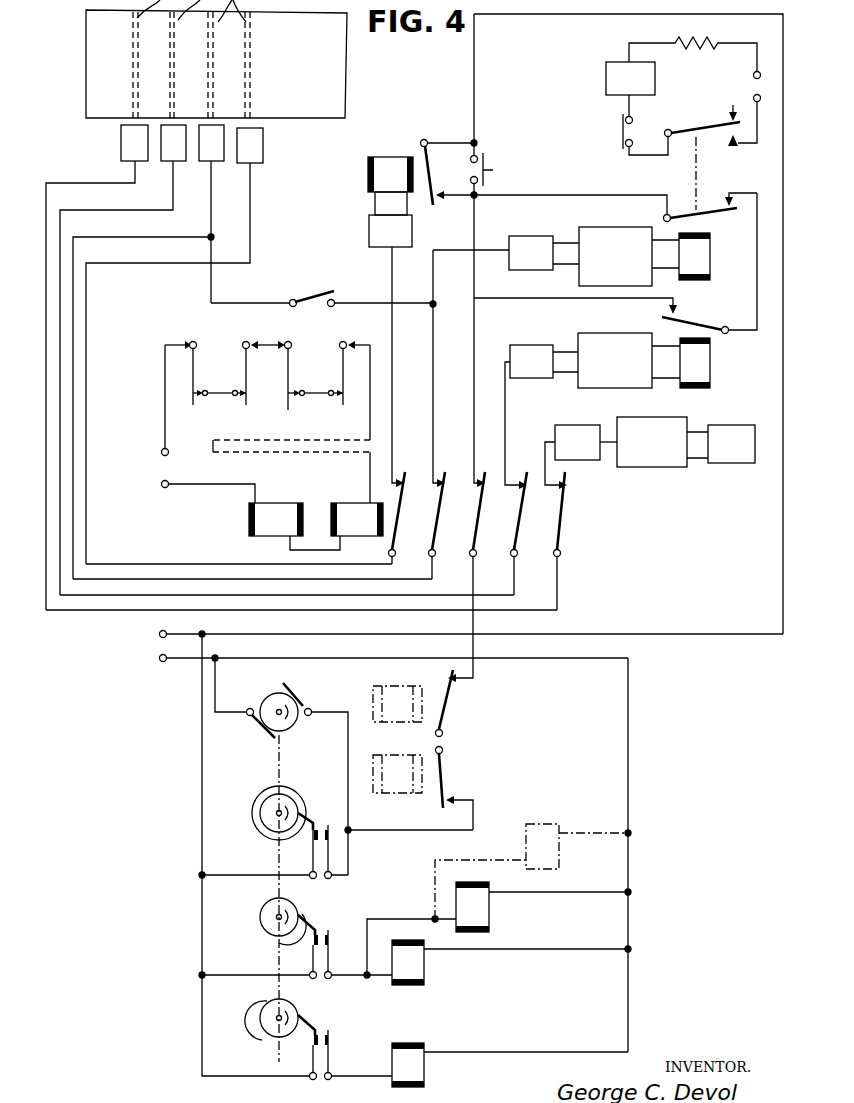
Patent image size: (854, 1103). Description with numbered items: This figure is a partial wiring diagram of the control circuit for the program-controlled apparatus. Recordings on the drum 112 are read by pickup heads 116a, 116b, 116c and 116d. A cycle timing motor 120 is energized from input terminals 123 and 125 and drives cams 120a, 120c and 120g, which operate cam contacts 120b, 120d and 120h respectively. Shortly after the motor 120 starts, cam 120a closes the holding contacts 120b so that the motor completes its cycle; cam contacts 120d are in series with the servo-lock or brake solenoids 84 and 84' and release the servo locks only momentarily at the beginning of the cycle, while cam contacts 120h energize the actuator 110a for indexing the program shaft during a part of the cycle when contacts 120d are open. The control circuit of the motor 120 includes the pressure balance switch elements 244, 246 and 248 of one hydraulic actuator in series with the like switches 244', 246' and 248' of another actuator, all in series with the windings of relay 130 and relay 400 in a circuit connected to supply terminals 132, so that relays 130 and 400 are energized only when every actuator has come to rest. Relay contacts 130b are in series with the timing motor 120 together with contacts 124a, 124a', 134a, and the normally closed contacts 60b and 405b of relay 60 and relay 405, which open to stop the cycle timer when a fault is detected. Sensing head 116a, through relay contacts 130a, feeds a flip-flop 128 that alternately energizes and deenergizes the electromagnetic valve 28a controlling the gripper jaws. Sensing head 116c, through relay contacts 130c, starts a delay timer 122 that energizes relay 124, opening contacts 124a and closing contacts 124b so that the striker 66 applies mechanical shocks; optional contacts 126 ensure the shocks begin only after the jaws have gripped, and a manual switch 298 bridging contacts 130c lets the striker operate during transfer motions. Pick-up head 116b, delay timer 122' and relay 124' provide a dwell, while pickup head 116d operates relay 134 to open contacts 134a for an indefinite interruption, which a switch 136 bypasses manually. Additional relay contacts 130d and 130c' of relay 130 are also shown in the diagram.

The drum 112 is at (88, 43).
The sensing head 116a is at (121, 145).
The pick-up head 116b is at (167, 160).
The sensing head 116c is at (202, 160).
The pickup head 116d is at (258, 148).
The relay 134 is at (368, 172).
The contacts 134a is at (420, 150).
The switch 136 is at (486, 170).
The striker 66 is at (606, 75).
The contacts 126 is at (618, 135).
The contacts 124b is at (695, 131).
The contacts 124a is at (615, 252).
The delay timer 122 is at (556, 339).
The relay 124 is at (711, 267).
The delay timer 122' is at (577, 393).
The relay contacts 124a' is at (708, 318).
The relay 124' is at (719, 363).
The flip-flop 128 is at (620, 466).
The electromagnetic valve 28a is at (726, 463).
The manual switch 298 is at (323, 298).
The pressure switch element 246 is at (190, 382).
The pressure switch element 248 is at (258, 360).
The pressure switch 246' is at (302, 363).
The pressure switch 248' is at (291, 409).
The pressure switch element 244 is at (219, 409).
The pressure switch 244' is at (315, 409).
The supply terminals 132 is at (163, 481).
The relay 400 is at (249, 520).
The relay 130 is at (357, 503).
The relay contacts 130d is at (374, 519).
The relay contacts 130c is at (419, 531).
The relay contacts 130b is at (472, 560).
The relay contacts 130c' is at (537, 533).
The relay contacts 130a is at (560, 553).
The input terminal 123 is at (160, 636).
The input terminal 125 is at (163, 662).
The cycle timing motor 120 is at (266, 700).
The relay 405 is at (373, 698).
The relay contacts 405b is at (455, 682).
The relay contacts 60b is at (455, 768).
The relay 60 is at (398, 792).
The cam 120a is at (260, 797).
The cam contacts 120b is at (318, 822).
The cam 120c is at (264, 906).
The cam contacts 120d is at (327, 928).
The servo-lock solenoid 84' is at (499, 899).
The servo-lock solenoid 84 is at (511, 962).
The cam 120g is at (262, 1011).
The cam contacts 120h is at (327, 1028).
The actuator 110a is at (426, 1072).